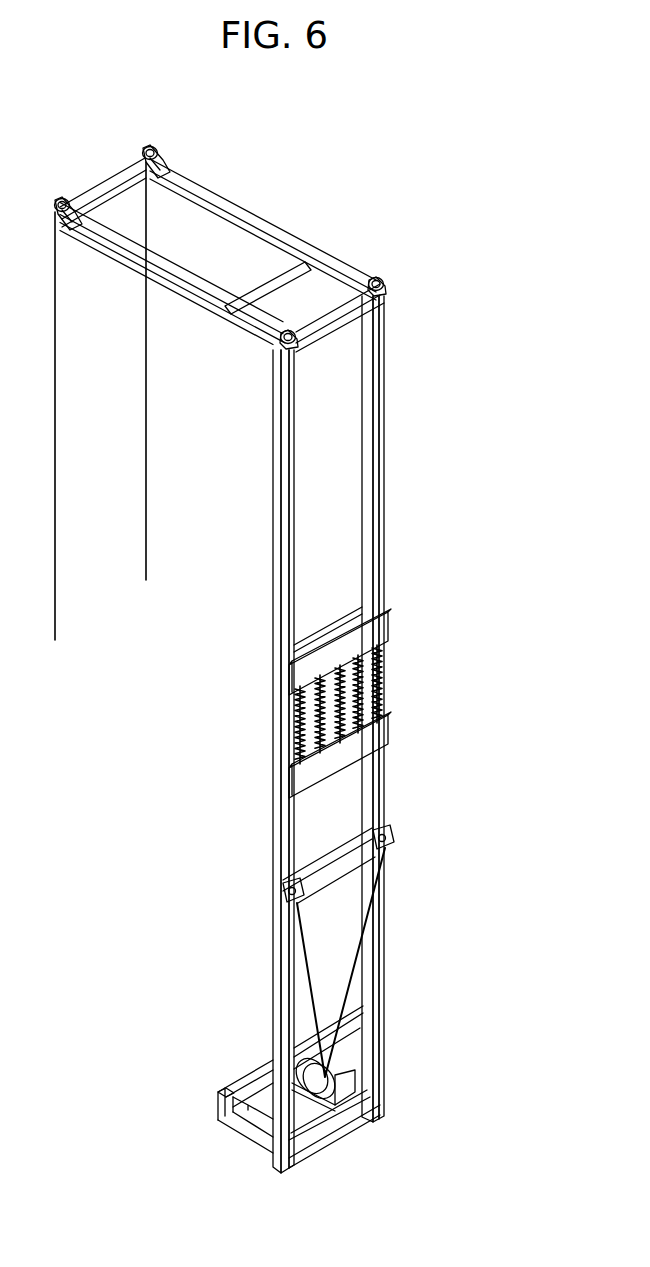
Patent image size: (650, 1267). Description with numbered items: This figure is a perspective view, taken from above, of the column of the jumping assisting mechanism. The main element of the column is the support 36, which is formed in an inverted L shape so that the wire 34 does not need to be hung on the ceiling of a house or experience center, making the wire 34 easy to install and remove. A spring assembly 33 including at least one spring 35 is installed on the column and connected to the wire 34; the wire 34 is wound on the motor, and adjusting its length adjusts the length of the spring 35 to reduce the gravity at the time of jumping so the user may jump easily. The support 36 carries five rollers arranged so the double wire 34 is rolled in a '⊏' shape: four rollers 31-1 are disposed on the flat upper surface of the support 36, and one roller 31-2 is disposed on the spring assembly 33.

The rollers 31-1 is at (378, 278).
The roller 31-2 is at (358, 1022).
The spring assembly 33 is at (388, 628).
The wire 34 is at (297, 548).
The spring 35 is at (300, 700).
The support 36 is at (276, 828).